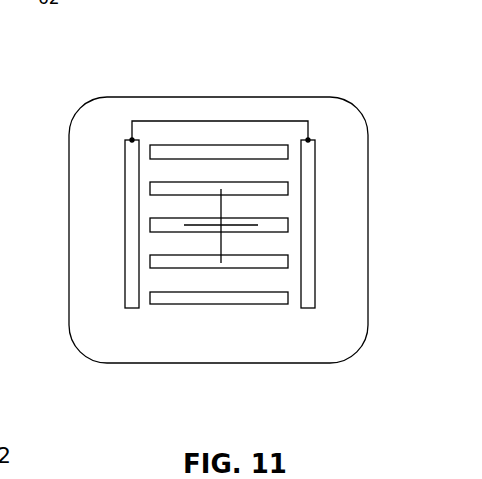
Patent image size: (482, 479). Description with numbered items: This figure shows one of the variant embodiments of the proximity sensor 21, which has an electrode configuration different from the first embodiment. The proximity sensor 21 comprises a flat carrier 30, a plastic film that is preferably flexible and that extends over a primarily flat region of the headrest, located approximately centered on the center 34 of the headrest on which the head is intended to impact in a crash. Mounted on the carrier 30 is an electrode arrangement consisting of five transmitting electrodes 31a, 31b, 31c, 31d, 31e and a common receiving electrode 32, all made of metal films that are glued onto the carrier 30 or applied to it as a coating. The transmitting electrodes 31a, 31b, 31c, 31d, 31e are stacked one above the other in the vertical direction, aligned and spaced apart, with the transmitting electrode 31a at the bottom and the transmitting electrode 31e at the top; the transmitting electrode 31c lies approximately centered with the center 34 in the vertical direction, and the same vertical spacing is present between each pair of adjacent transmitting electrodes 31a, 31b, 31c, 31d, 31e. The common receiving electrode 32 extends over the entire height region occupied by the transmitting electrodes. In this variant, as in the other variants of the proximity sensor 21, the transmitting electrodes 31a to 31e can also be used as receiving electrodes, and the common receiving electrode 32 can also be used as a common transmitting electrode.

The proximity sensor 21 is at (349, 83).
The carrier 30 is at (71, 335).
The common receiving electrode 32 is at (131, 228).
The transmitting electrode 31a is at (263, 300).
The transmitting electrode 31b is at (178, 262).
The transmitting electrode 31c is at (284, 225).
The transmitting electrode 31d is at (177, 188).
The transmitting electrode 31e is at (233, 148).
The center 34 is at (223, 224).